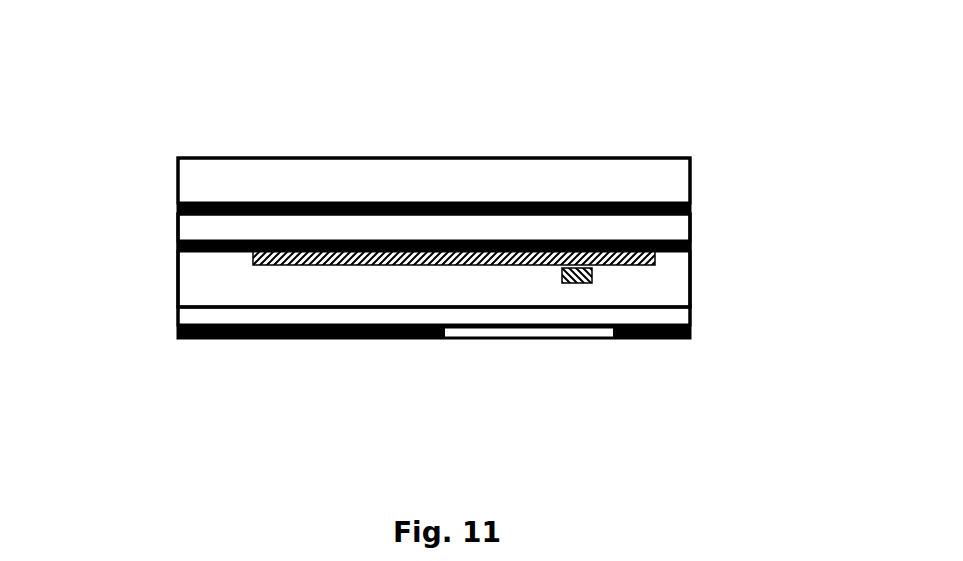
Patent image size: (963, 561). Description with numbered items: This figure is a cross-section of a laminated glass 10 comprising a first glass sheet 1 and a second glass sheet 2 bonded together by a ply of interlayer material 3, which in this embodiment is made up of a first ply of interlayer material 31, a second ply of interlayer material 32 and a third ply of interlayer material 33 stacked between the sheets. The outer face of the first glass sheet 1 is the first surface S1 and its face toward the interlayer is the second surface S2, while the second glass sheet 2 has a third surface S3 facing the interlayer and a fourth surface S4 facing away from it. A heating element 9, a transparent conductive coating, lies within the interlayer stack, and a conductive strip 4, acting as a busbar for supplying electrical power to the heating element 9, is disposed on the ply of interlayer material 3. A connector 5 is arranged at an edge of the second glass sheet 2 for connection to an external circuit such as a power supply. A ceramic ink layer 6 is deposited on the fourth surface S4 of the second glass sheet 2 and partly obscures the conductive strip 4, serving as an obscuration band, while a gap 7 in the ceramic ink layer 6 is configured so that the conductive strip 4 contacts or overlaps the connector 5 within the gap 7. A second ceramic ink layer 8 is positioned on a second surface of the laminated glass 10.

The laminated glass 10 is at (138, 52).
The first glass sheet 1 is at (178, 180).
The second glass sheet 2 is at (178, 317).
The ply of interlayer material 3 is at (88, 300).
The first ply of interlayer material 31 is at (178, 222).
The second ply of interlayer material 32 is at (178, 250).
The third ply of interlayer material 33 is at (178, 279).
The conductive strip 4 is at (657, 262).
The connector 5 is at (594, 275).
The ceramic ink layer 6 is at (362, 339).
The gap 7 is at (445, 353).
The second ceramic ink layer 8 is at (524, 203).
The heating element 9 is at (232, 241).
The first surface S1 is at (690, 158).
The second surface S2 is at (690, 202).
The third surface S3 is at (690, 308).
The fourth surface S4 is at (690, 327).